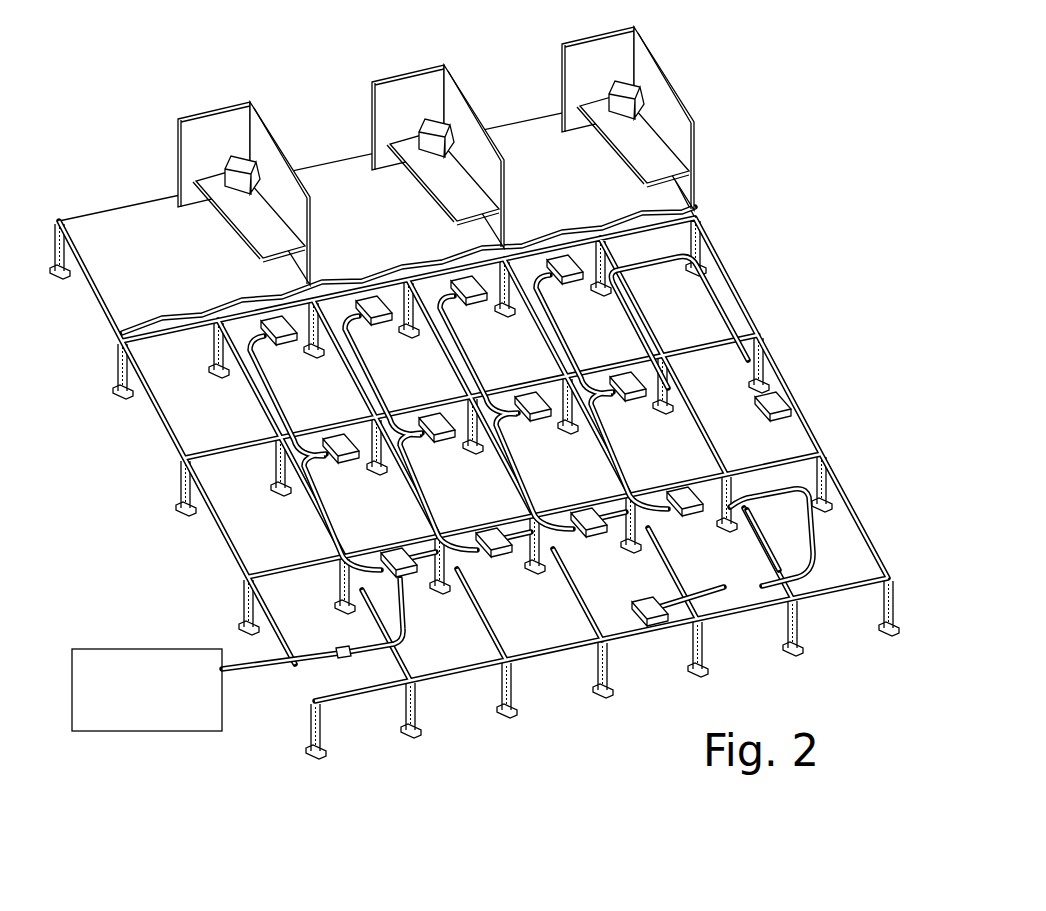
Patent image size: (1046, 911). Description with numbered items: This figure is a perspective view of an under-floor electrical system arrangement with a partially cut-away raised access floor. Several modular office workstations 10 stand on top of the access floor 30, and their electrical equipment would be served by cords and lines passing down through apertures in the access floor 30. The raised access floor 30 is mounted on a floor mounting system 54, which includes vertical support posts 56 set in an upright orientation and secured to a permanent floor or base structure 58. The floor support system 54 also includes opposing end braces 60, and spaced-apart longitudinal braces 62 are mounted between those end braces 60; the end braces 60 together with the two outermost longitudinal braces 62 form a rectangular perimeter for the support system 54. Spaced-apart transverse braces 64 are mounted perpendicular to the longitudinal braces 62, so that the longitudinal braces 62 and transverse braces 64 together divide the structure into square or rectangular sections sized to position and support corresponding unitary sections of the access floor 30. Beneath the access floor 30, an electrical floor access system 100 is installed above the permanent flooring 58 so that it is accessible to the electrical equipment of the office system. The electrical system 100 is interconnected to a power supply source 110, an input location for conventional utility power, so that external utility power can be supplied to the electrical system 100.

The workstation 10 is at (836, 0).
The access floor 30 is at (187, 325).
The floor mounting system 54 is at (474, 488).
The vertical support posts 56 is at (60, 240).
The permanent floor 58 is at (340, 650).
The end braces 60 is at (158, 410).
The longitudinal braces 62 is at (243, 438).
The transverse braces 64 is at (306, 497).
The electrical floor access system 100 is at (390, 541).
The power supply source 110 is at (112, 646).